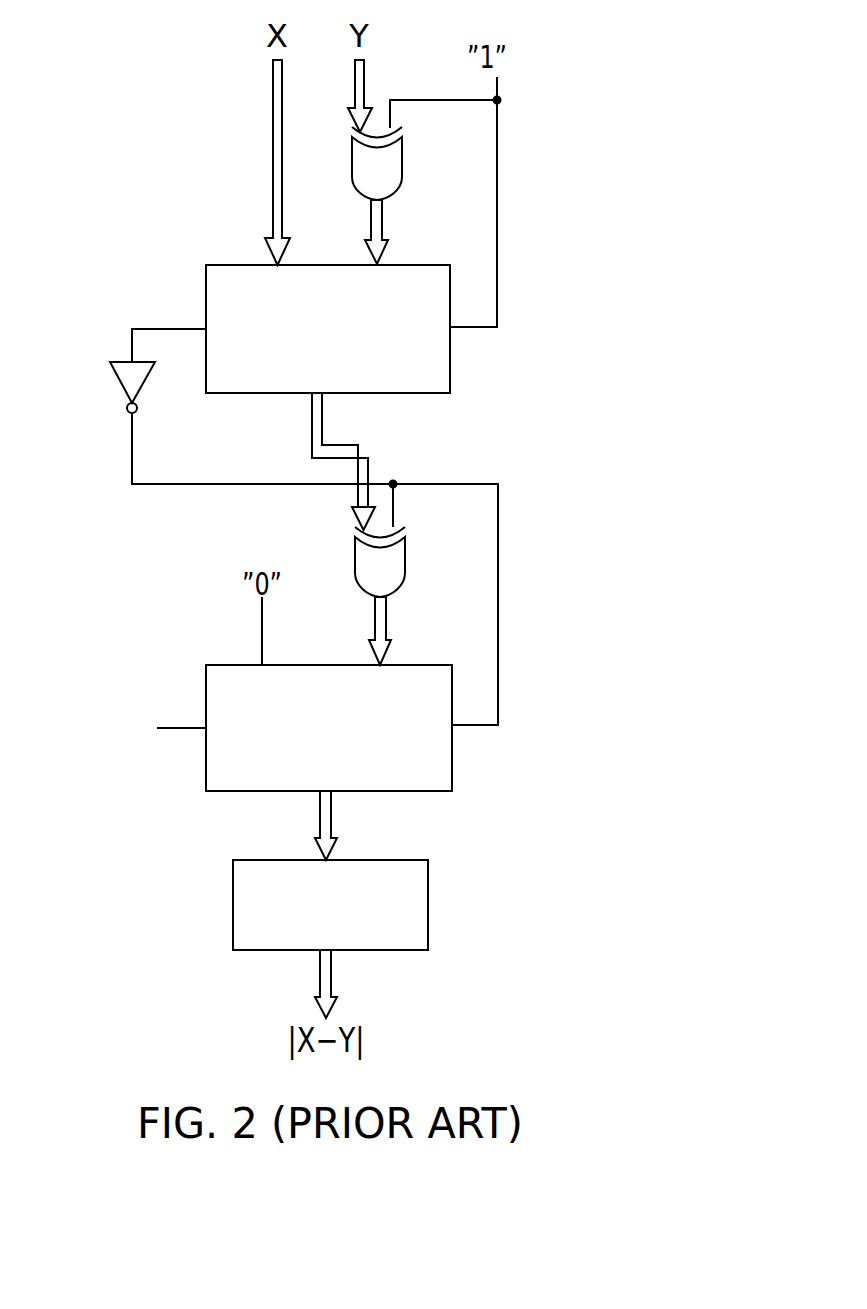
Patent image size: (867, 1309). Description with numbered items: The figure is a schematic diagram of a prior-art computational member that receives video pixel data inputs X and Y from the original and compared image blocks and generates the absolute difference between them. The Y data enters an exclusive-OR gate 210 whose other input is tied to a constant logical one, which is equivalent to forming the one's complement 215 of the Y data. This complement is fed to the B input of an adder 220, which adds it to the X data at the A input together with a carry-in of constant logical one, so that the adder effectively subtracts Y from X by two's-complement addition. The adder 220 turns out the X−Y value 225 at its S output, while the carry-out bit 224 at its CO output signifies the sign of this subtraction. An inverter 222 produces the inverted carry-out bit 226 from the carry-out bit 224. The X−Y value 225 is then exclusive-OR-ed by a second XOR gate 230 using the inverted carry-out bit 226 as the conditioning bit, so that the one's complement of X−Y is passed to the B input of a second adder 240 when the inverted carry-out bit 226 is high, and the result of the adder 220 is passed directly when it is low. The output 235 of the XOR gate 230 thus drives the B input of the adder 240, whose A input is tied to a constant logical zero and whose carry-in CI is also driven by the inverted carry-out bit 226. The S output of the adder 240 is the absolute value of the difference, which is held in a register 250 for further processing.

The exclusive-OR gate 210 is at (403, 163).
The one's complement 215 is at (383, 223).
The adder 220 is at (450, 357).
The inverter 222 is at (117, 382).
The carry-out bit 224 is at (175, 328).
The X−Y value 225 is at (368, 458).
The inverted carry-out bit 226 is at (132, 458).
The XOR gate 230 is at (406, 553).
The output of second XOR gate 235 is at (387, 627).
The adder 240 is at (452, 762).
The register 250 is at (428, 903).